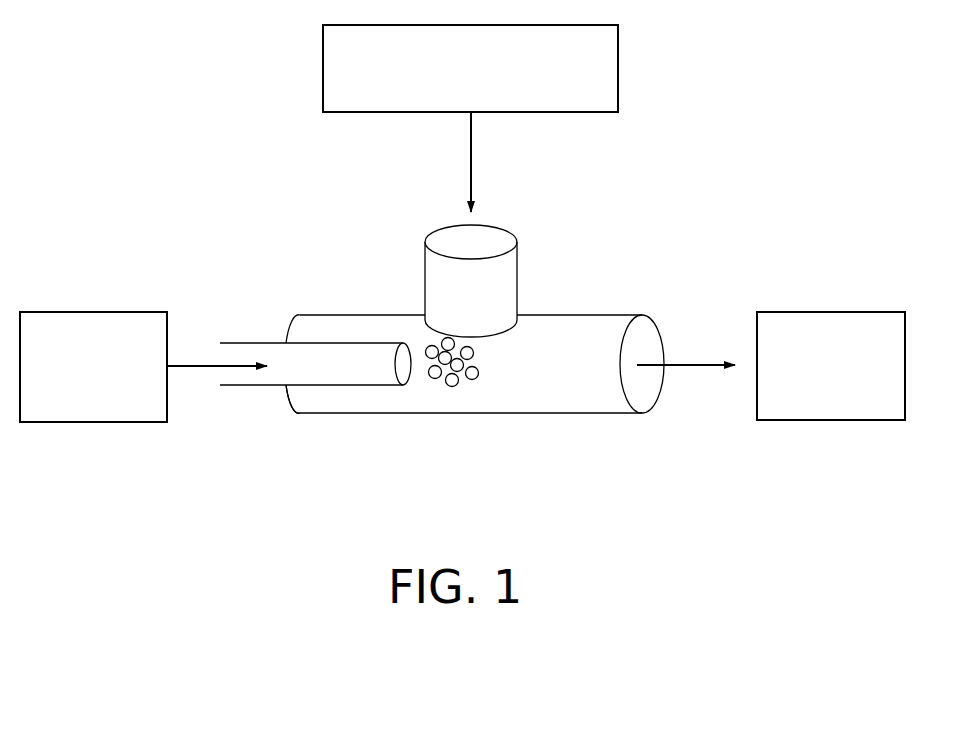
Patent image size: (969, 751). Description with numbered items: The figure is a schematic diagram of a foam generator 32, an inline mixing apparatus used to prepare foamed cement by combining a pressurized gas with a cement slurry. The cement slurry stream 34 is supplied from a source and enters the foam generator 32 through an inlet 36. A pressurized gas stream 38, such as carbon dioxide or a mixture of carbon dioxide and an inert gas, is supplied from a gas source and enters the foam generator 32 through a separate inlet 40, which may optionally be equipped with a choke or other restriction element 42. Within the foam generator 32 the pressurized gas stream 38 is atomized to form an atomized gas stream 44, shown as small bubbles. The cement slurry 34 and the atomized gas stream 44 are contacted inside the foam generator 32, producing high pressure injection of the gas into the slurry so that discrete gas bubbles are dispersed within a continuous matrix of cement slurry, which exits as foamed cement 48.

The foam generator 32 is at (599, 314).
The cement slurry stream 34 is at (618, 68).
The inlet 36 is at (494, 228).
The pressurized gas stream 38 is at (80, 312).
The inlet 40 is at (250, 343).
The choke or other restriction element 42 is at (308, 416).
The atomized gas stream 44 is at (451, 387).
The foamed cement 48 is at (820, 312).